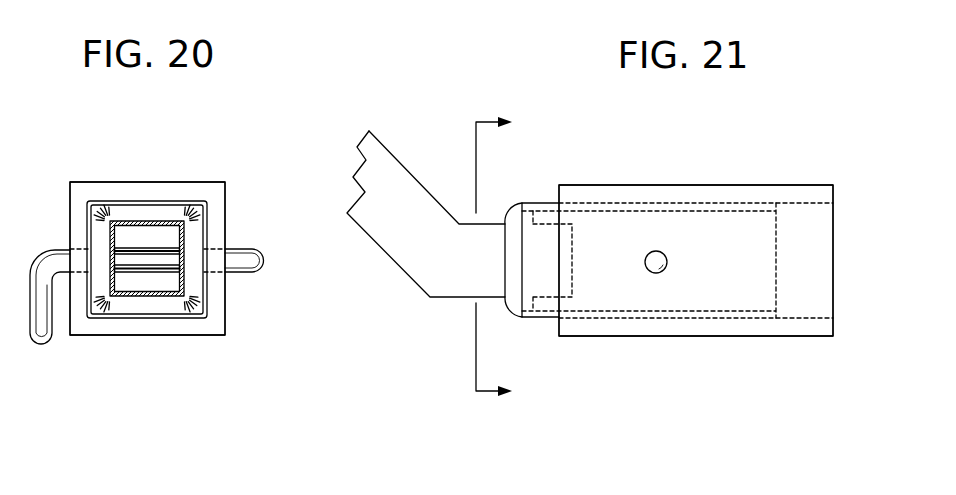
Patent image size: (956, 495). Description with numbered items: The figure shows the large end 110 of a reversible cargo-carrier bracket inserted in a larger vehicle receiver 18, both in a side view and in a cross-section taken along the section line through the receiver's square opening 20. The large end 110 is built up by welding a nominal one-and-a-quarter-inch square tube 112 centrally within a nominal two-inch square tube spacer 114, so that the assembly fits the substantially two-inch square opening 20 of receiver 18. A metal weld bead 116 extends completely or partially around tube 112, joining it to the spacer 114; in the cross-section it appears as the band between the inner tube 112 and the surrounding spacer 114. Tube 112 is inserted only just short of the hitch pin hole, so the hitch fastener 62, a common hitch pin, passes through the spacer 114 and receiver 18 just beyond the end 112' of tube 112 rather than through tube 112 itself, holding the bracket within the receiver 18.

In FIG. 20, the large end 110 is at (105, 186).
In FIG. 21, the large end 110 is at (546, 180).
In FIG. 20, the square tube spacer 114 is at (148, 202).
In FIG. 21, the square tube spacer 114 is at (776, 280).
In FIG. 20, the square tube 112 is at (156, 222).
In FIG. 21, the square tube 112 is at (426, 195).
In FIG. 21, the end of tube 112' is at (588, 304).
In FIG. 20, the metal weld bead 116 is at (148, 302).
In FIG. 21, the metal weld bead 116 is at (505, 258).
In FIG. 20, the hitch fastener 62 is at (262, 262).
In FIG. 21, the hitch fastener 62 is at (667, 256).
In FIG. 20, the receiver 18 is at (185, 336).
In FIG. 21, the receiver 18 is at (707, 337).
In FIG. 21, the square opening 20 is at (507, 259).